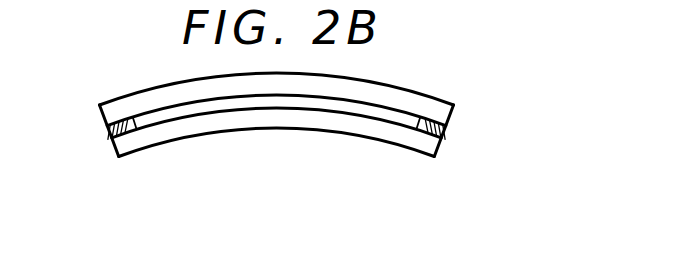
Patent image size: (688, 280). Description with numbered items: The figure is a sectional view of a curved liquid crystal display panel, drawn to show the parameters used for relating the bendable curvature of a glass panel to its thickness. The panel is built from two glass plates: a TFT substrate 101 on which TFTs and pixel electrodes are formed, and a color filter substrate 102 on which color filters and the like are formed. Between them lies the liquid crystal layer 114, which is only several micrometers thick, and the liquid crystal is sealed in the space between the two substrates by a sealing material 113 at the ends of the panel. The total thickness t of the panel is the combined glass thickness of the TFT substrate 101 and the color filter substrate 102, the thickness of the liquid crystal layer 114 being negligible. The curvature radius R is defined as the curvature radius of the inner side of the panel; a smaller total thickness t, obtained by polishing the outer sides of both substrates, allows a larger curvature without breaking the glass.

The TFT substrate 101 is at (446, 150).
The color filter substrate 102 is at (447, 113).
The sealing material 113 is at (448, 132).
The liquid crystal layer 114 is at (363, 110).
The curvature radius R is at (218, 133).
The total thickness t is at (100, 105).